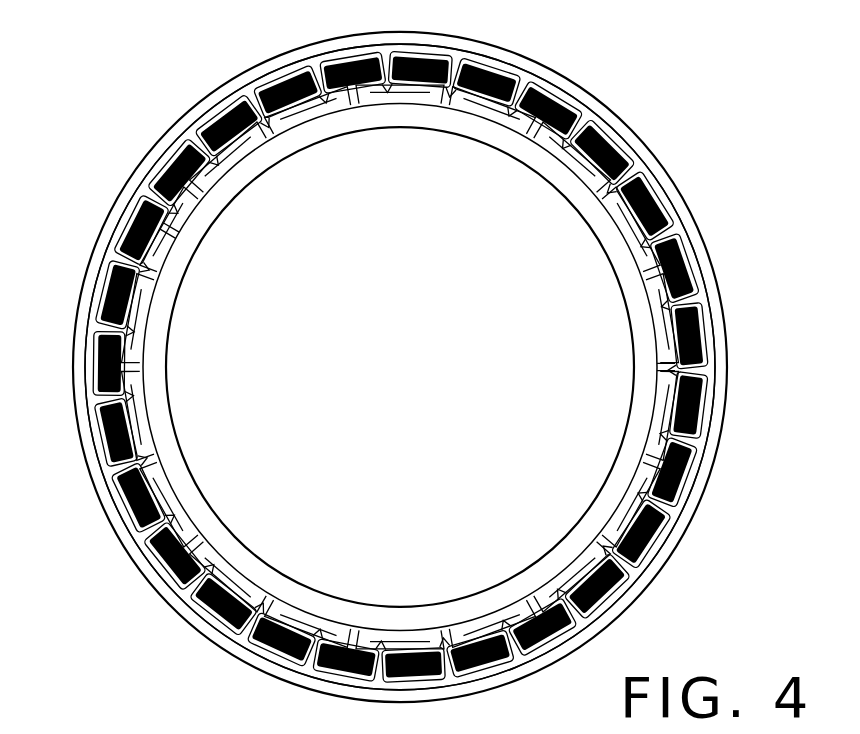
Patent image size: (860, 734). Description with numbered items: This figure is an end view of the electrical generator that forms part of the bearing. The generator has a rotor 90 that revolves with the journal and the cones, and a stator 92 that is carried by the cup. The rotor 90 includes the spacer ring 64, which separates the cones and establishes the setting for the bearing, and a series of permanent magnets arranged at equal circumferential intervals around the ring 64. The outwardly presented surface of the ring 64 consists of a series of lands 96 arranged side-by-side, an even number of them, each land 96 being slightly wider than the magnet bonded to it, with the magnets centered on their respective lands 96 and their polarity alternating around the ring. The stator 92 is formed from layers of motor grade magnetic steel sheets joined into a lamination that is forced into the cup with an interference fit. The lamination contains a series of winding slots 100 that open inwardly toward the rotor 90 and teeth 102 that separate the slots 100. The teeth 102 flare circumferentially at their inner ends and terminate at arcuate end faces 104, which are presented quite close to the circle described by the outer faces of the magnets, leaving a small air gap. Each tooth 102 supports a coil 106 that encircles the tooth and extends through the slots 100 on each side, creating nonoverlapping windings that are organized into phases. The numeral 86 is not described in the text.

The spacer ring 64 is at (297, 145).
The rotor ring 86 is at (657, 202).
The rotor 90 is at (583, 232).
The stator 92 is at (654, 148).
The lands 96 is at (637, 258).
The winding slots 100 is at (453, 70).
The teeth 102 is at (663, 380).
The arcuate end faces 104 is at (418, 87).
The coil 106 is at (273, 82).